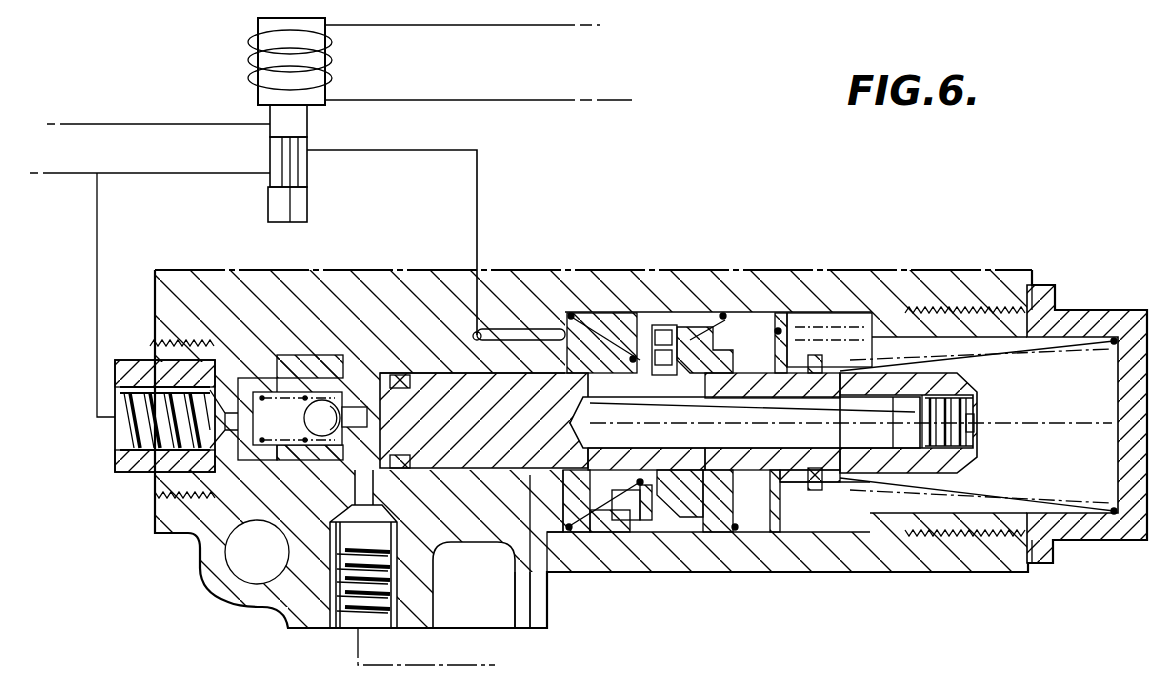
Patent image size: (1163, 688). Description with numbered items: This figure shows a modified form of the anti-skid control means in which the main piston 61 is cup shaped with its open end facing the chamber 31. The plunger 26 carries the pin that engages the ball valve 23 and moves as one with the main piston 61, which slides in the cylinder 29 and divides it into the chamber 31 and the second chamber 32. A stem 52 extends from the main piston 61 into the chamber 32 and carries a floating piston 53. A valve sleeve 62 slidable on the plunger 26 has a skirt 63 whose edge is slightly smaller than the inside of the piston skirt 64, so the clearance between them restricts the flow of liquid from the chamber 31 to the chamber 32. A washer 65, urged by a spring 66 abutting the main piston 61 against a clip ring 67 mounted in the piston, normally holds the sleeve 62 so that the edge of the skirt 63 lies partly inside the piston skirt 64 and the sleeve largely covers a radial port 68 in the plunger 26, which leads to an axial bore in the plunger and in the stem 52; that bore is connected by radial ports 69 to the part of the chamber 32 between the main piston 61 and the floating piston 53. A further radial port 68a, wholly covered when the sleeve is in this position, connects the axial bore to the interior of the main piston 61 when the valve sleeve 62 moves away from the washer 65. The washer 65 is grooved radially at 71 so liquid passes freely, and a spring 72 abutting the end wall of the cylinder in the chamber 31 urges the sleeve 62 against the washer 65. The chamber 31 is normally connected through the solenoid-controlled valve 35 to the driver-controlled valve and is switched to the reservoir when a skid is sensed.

The ball valve 23 is at (325, 413).
The plunger 26 is at (478, 442).
The cylinder 29 is at (845, 545).
The chamber 31 is at (598, 522).
The second chamber 32 is at (1085, 473).
The valve 35 is at (283, 117).
The stem 52 is at (945, 460).
The floating piston 53 is at (783, 535).
The main piston 61 is at (722, 520).
The valve sleeve 62 is at (645, 482).
The skirt 63 is at (620, 497).
The piston skirt 64 is at (672, 520).
The washer 65 is at (679, 338).
The spring 66 is at (707, 305).
The clip ring 67 is at (648, 308).
The radial port 68 is at (648, 398).
The further radial port 68a is at (640, 460).
The radial ports 69 is at (728, 387).
The radial grooves 71 is at (667, 338).
The spring 72 is at (567, 512).